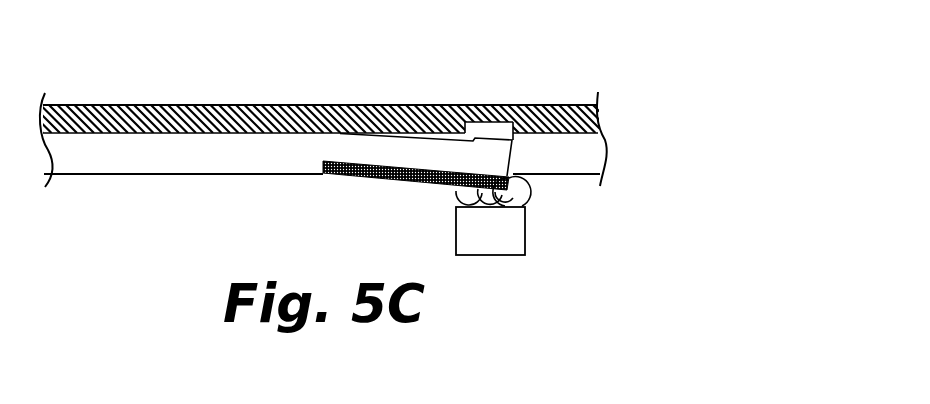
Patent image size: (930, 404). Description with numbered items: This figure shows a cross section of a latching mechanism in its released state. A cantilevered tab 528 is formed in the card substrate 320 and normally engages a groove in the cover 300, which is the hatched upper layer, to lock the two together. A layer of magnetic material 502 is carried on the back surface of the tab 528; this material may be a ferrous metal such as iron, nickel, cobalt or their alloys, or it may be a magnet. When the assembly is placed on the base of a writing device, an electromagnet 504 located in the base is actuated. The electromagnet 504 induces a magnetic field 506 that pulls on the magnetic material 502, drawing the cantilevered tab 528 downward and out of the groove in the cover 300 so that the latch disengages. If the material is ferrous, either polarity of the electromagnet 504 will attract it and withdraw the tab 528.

The cover 300 is at (565, 122).
The card substrate 320 is at (577, 158).
The cantilevered tab 528 is at (474, 160).
The magnetic material 502 is at (420, 182).
The magnetic field 506 is at (522, 195).
The electromagnet 504 is at (500, 235).